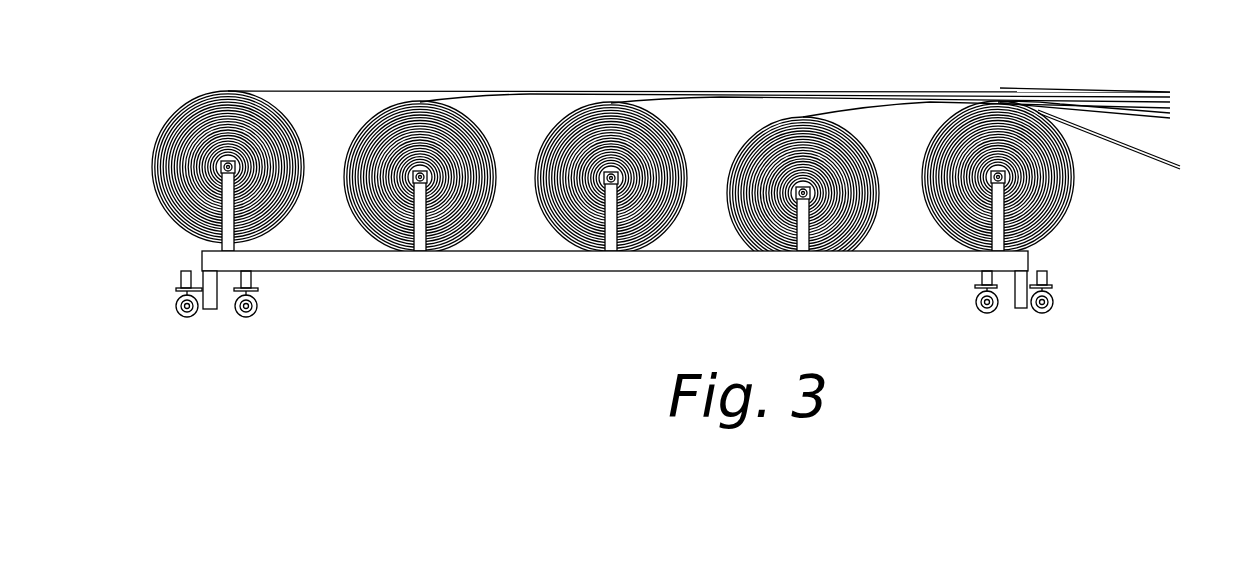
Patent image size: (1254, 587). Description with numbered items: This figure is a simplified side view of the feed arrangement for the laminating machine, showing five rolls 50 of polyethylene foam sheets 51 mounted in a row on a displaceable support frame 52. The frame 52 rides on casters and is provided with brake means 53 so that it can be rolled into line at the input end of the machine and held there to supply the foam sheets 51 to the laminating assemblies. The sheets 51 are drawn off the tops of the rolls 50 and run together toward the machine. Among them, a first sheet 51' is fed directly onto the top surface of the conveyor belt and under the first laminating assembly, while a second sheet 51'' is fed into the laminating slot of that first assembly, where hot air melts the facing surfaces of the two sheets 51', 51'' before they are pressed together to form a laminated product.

The rolls of polyethylene foam sheets 50 is at (773, 150).
The polyethylene foam sheets 51 is at (699, 70).
The first sheet 51' is at (1109, 163).
The second sheet 51'' is at (1121, 113).
The displaceable support frame 52 is at (530, 262).
The brake means 53 is at (220, 312).